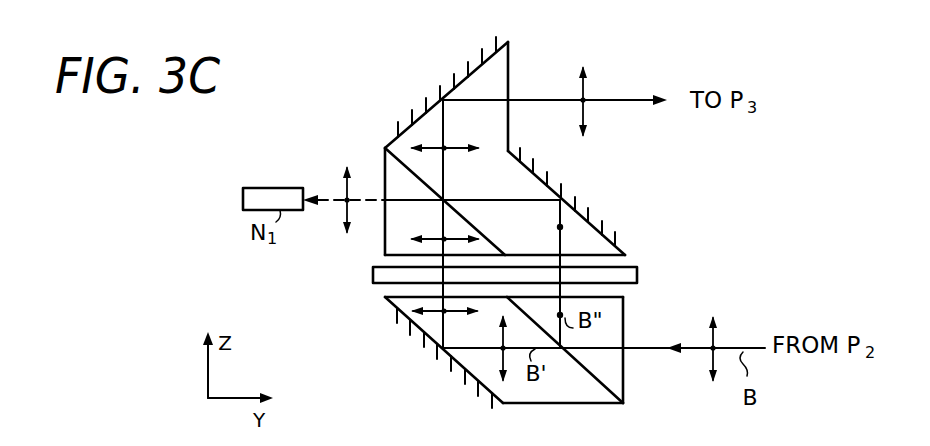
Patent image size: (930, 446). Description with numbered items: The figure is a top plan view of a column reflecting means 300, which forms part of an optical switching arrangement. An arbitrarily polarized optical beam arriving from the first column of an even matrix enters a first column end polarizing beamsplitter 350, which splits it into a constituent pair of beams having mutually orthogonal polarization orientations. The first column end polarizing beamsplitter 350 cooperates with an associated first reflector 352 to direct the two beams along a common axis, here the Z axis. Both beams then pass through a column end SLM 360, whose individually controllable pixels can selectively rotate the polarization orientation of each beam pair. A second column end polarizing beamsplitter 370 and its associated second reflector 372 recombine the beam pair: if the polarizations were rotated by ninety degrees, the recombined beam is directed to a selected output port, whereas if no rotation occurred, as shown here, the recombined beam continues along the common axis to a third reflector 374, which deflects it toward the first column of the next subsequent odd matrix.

The polarization beam splitter assembly 300 is at (540, 58).
The second column end polarizing beamsplitter 370 is at (380, 168).
The third reflector 374 is at (429, 100).
The second reflector 372 is at (555, 192).
The column end SLM 360 is at (638, 273).
The first column end polarizing beamsplitter 350 is at (613, 373).
The first reflector 352 is at (470, 395).